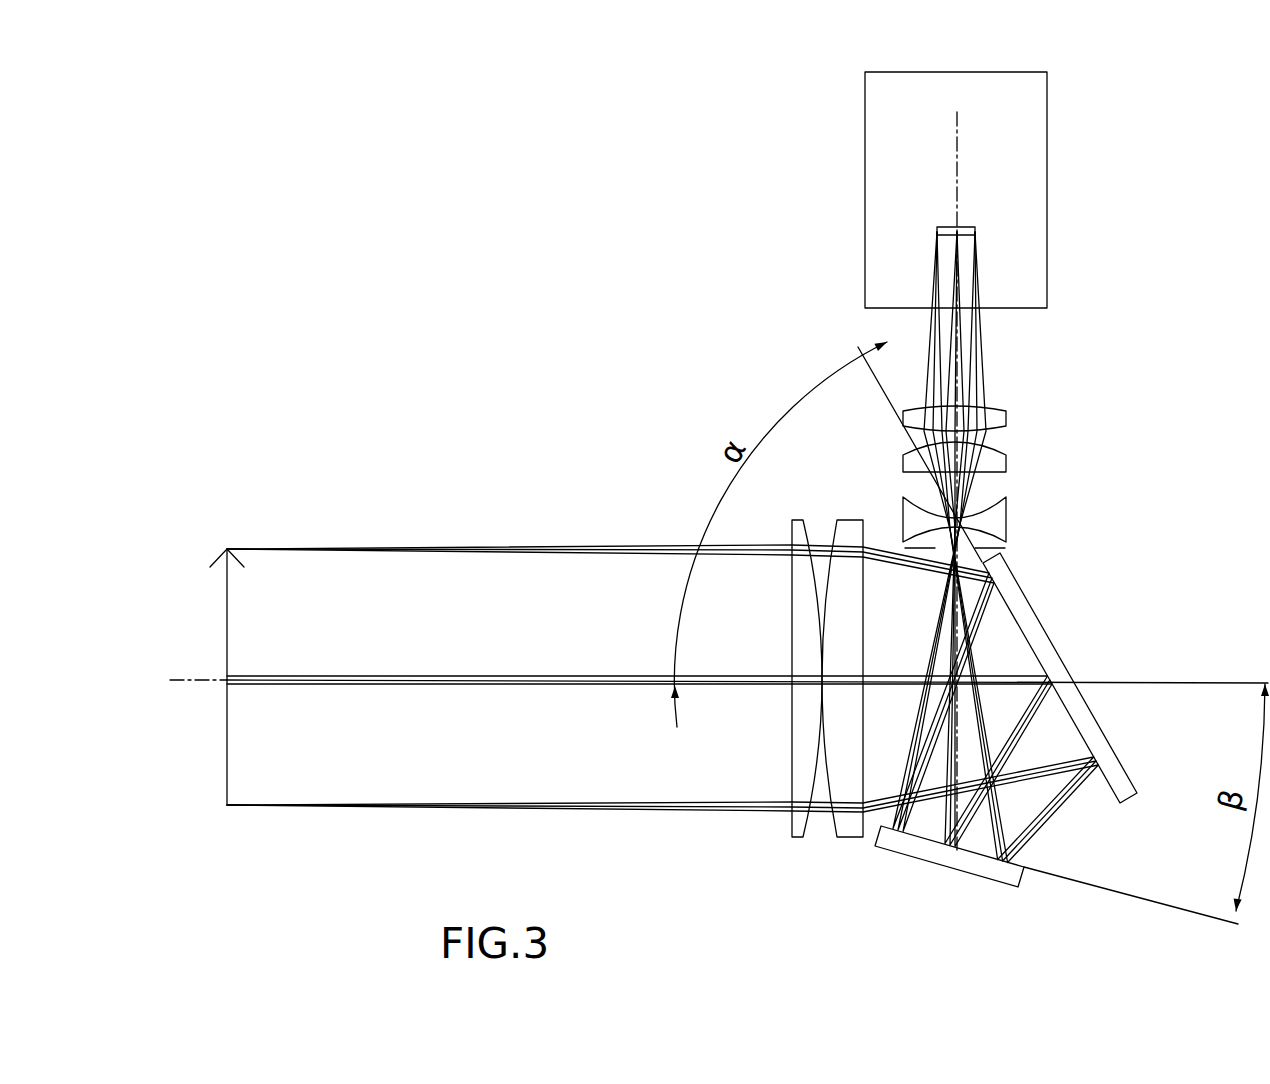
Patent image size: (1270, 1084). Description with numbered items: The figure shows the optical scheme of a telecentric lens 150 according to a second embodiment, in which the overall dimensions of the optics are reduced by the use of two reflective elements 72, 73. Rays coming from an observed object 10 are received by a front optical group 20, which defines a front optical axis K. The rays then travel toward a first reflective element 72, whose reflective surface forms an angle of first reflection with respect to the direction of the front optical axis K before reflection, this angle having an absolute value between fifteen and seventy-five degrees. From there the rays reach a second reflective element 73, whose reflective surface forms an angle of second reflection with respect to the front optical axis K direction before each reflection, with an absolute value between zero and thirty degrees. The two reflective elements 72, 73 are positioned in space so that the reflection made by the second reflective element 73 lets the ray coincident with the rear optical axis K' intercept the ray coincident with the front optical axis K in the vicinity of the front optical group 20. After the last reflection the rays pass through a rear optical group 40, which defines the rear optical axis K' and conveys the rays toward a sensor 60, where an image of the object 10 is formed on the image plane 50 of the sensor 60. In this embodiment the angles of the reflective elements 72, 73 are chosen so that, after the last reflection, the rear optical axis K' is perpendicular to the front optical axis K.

The observed object 10 is at (227, 606).
The front optical group 20 is at (848, 515).
The rear optical group 40 is at (1012, 417).
The image plane 50 is at (946, 226).
The sensor 60 is at (862, 100).
The first reflective element 72 is at (1057, 648).
The second reflective element 73 is at (948, 868).
The telecentric lens 150 is at (470, 355).
The front optical axis K is at (155, 631).
The rear optical axis K' is at (1050, 468).